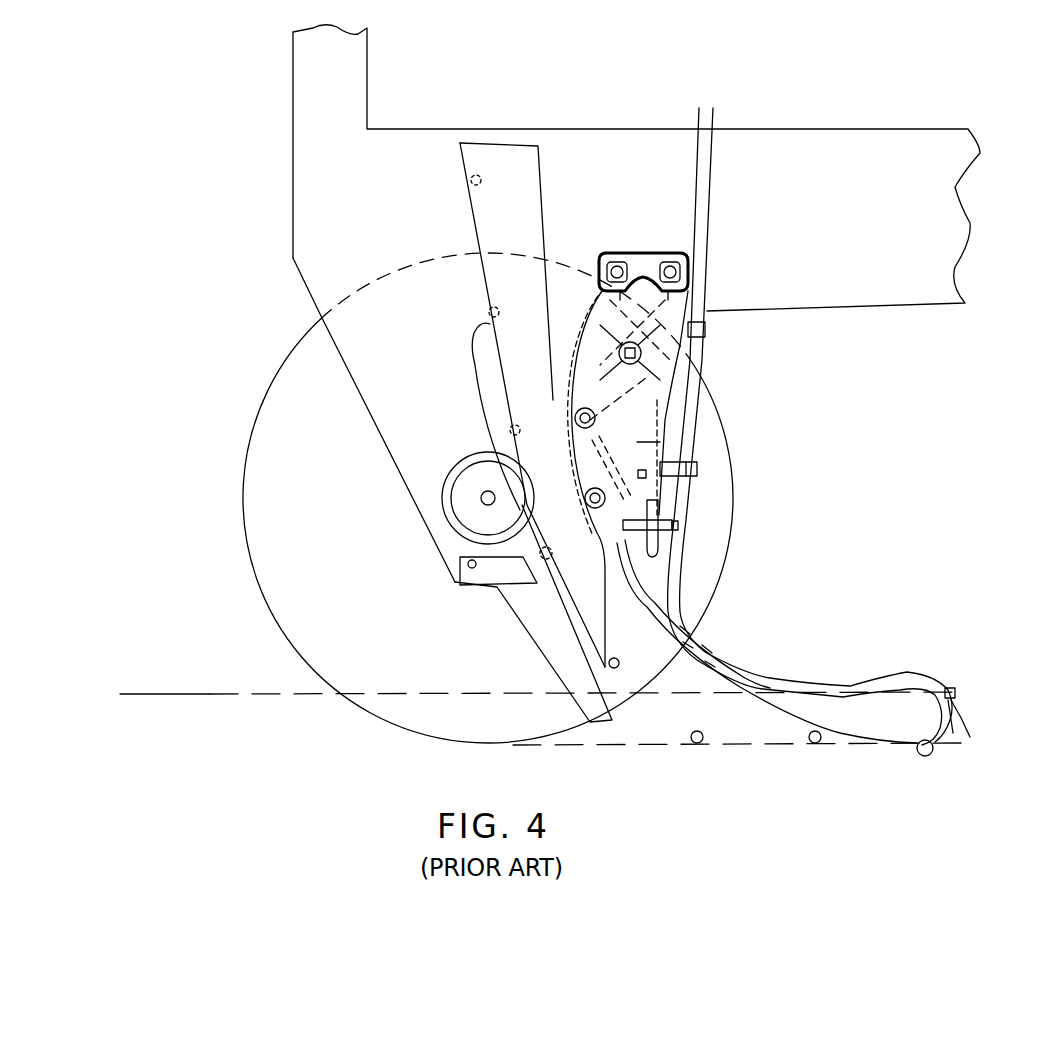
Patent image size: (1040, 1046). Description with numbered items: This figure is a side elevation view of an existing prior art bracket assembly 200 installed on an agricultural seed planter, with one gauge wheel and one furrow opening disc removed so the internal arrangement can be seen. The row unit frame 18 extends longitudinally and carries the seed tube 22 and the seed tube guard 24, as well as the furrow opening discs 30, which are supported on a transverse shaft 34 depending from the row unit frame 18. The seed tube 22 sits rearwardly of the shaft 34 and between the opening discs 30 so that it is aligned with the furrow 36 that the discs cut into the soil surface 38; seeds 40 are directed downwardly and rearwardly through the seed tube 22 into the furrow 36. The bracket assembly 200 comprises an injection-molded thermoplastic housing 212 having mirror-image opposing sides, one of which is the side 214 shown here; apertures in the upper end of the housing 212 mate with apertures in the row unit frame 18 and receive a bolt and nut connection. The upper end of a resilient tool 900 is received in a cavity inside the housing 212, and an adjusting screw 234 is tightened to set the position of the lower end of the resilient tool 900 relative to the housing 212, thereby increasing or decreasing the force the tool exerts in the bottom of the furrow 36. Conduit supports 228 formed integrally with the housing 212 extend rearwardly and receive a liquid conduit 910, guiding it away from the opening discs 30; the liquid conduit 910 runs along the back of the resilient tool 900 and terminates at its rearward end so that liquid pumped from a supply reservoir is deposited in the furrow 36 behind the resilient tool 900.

The row unit frame 18 is at (852, 136).
The seed tube 22 is at (506, 352).
The seed tube guard 24 is at (525, 617).
The furrow opening discs 30 is at (268, 503).
The transverse shaft 34 is at (481, 499).
The furrow 36 is at (727, 728).
The soil surface 38 is at (168, 693).
The seeds 40 is at (488, 312).
The bracket assembly 200 is at (668, 412).
The housing 212 is at (690, 373).
The first side 214 is at (637, 440).
The conduit supports 228 is at (707, 333).
The adjusting screw 234 is at (678, 526).
The resilient tool 900 is at (914, 703).
The liquid conduit 910 is at (713, 118).